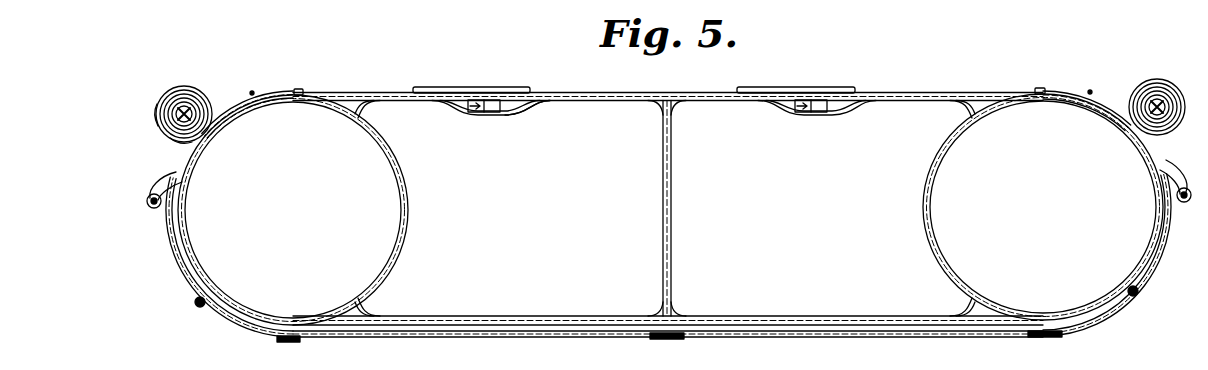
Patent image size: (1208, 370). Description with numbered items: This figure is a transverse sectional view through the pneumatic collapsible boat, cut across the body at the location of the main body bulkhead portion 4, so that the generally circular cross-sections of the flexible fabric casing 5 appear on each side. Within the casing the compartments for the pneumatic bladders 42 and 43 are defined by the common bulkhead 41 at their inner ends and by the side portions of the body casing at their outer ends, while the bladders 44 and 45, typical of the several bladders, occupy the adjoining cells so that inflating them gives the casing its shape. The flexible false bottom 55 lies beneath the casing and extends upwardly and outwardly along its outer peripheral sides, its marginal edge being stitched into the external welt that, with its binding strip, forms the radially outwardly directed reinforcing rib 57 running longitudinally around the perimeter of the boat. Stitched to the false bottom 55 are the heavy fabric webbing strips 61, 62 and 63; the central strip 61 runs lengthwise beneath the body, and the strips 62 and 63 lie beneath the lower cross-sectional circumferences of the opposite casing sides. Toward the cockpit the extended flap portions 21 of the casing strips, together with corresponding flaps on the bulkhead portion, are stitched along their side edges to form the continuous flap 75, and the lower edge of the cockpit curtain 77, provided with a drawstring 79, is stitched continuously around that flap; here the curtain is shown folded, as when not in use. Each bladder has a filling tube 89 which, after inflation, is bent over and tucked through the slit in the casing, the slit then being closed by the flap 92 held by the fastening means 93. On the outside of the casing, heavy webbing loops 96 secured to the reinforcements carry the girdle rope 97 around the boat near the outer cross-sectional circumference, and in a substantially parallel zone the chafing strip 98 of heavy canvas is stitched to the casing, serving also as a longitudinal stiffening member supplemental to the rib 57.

The main body bulkhead portion 4 is at (588, 92).
The fabric casing 5 is at (553, 92).
The flap portion 21 is at (165, 132).
The common bulkhead 41 is at (672, 182).
The pneumatic bladder 42 is at (520, 114).
The pneumatic bladder 43 is at (958, 108).
The pneumatic bladder 44 is at (400, 160).
The pneumatic bladder 45 is at (940, 162).
The false bottom 55 is at (495, 328).
The reinforcing rib 57 is at (196, 302).
The flexible strip 61 is at (678, 340).
The flexible strip 62 is at (292, 342).
The flexible strip 63 is at (1035, 338).
The continuous flap 75 is at (158, 116).
The cockpit curtain 77 is at (192, 73).
The drawstring 79 is at (178, 108).
The filling tube 89 is at (470, 100).
The flap 92 is at (233, 93).
The fastening means 93 is at (255, 92).
The webbing loop 96 is at (160, 185).
The girdle rope 97 is at (147, 203).
The chafing strip 98 is at (168, 228).